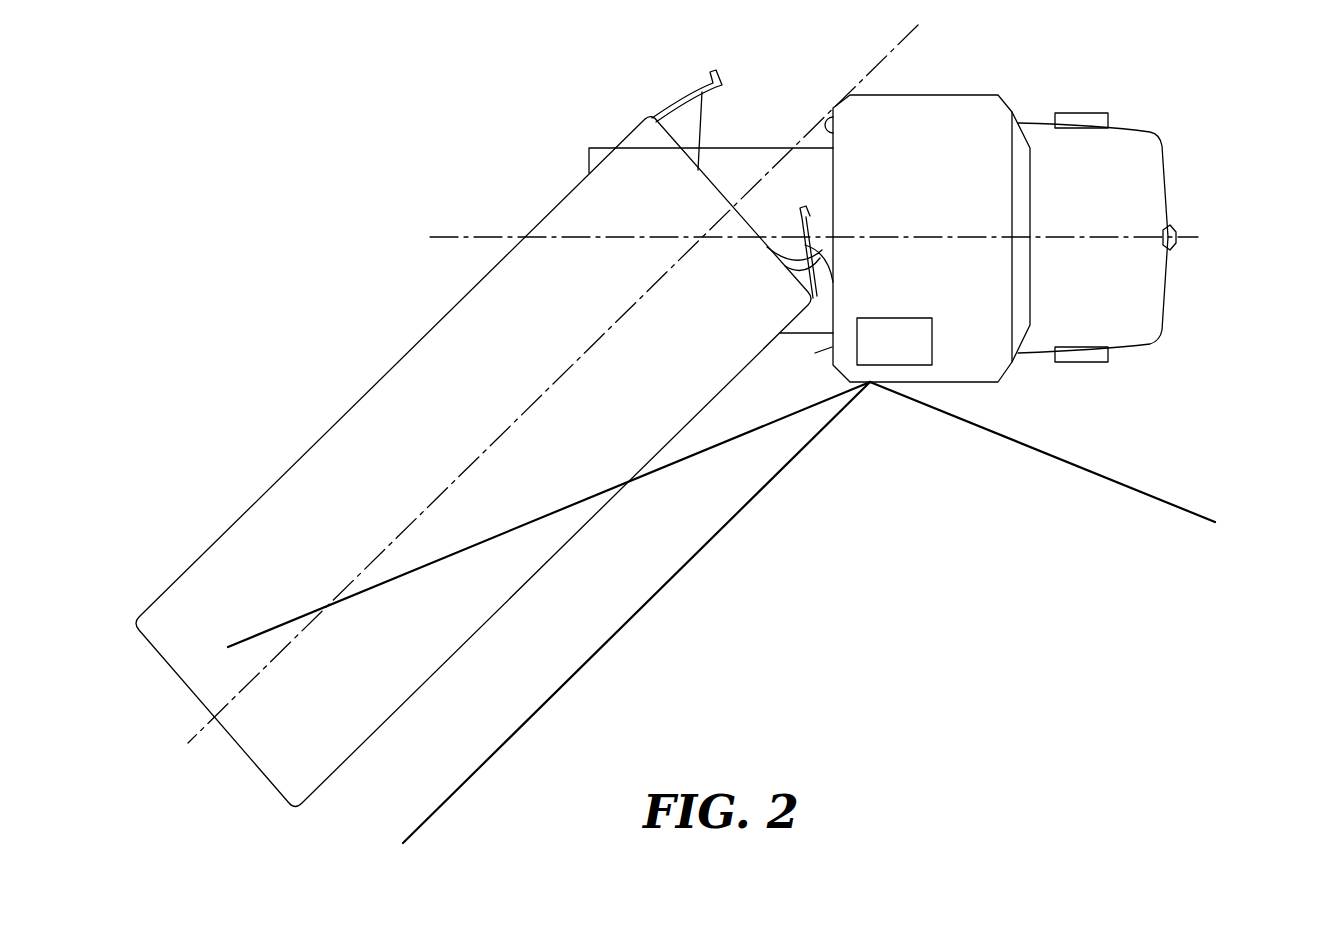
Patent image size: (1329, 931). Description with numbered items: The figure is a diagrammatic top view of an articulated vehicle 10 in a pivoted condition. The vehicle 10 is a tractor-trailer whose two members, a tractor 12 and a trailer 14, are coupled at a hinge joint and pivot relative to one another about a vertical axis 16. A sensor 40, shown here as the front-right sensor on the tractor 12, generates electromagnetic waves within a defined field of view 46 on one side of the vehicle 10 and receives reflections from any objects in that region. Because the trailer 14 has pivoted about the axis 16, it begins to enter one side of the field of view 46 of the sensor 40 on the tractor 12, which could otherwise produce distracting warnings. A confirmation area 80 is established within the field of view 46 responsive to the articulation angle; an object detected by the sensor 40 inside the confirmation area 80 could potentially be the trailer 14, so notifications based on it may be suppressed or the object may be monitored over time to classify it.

The articulated vehicle 10 is at (1222, 116).
The tractor 12 is at (1132, 308).
The trailer 14 is at (363, 452).
The vertical axis 16 is at (703, 237).
The sensor 40 is at (894, 341).
The field of view 46 is at (978, 552).
The confirmation area 80 is at (575, 630).